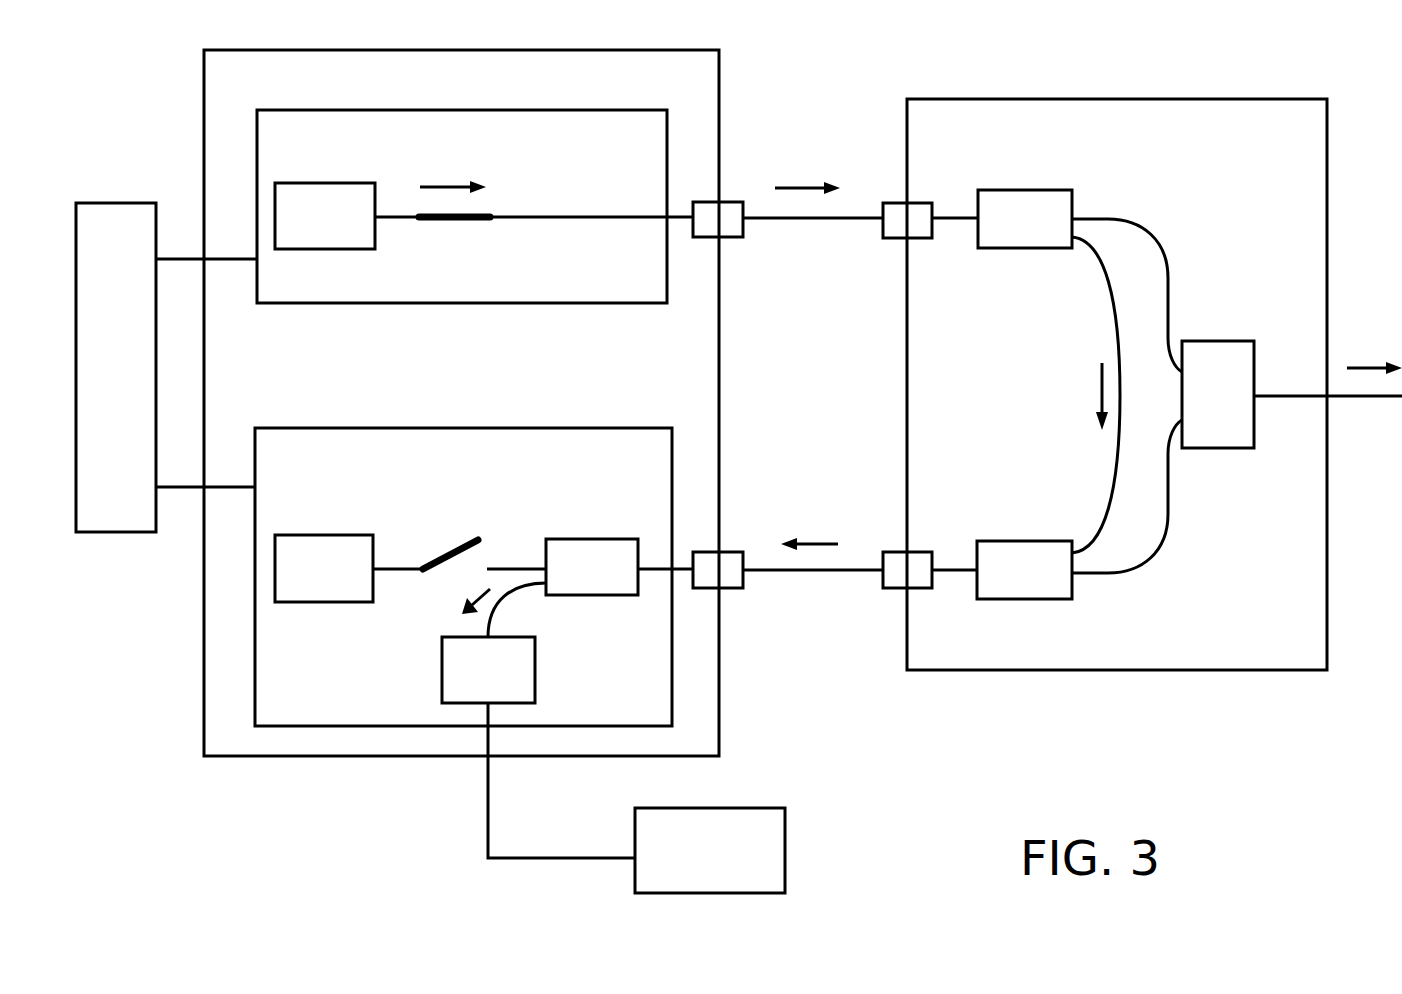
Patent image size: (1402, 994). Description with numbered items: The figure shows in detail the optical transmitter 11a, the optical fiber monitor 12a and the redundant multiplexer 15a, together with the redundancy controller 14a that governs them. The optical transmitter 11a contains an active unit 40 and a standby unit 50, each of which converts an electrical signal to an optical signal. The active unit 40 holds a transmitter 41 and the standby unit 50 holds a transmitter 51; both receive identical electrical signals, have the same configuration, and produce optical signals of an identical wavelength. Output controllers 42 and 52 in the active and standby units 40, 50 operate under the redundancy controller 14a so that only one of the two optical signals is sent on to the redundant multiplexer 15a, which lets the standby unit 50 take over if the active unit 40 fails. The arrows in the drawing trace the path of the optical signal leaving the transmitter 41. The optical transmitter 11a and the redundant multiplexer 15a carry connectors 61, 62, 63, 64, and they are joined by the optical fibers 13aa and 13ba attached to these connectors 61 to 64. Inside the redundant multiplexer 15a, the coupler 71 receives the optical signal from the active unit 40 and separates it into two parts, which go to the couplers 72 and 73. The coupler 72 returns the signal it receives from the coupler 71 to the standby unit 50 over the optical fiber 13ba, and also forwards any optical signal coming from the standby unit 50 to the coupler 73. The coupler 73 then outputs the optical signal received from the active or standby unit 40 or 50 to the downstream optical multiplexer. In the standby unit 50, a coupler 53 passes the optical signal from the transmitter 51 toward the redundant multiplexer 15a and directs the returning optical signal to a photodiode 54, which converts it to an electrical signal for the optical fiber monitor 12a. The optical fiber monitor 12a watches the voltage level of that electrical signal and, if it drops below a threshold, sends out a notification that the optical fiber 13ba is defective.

The optical transmitter 11a is at (292, 50).
The optical fiber monitor 12a is at (785, 850).
The optical fiber 13aa is at (795, 222).
The optical fiber 13ba is at (795, 573).
The redundancy controller 14a is at (115, 203).
The redundant multiplexer 15a is at (985, 99).
The active unit 40 is at (320, 110).
The transmitter 41 is at (290, 183).
The output controller 42 is at (446, 221).
The standby unit 50 is at (320, 428).
The transmitter 51 is at (290, 535).
The output controller 52 is at (442, 548).
The coupler 53 is at (588, 539).
The photodiode 54 is at (442, 667).
The connector 61 is at (733, 202).
The connector 62 is at (730, 552).
The connector 63 is at (893, 203).
The connector 64 is at (892, 552).
The coupler 71 is at (1024, 252).
The coupler 72 is at (1020, 541).
The coupler 73 is at (1218, 448).